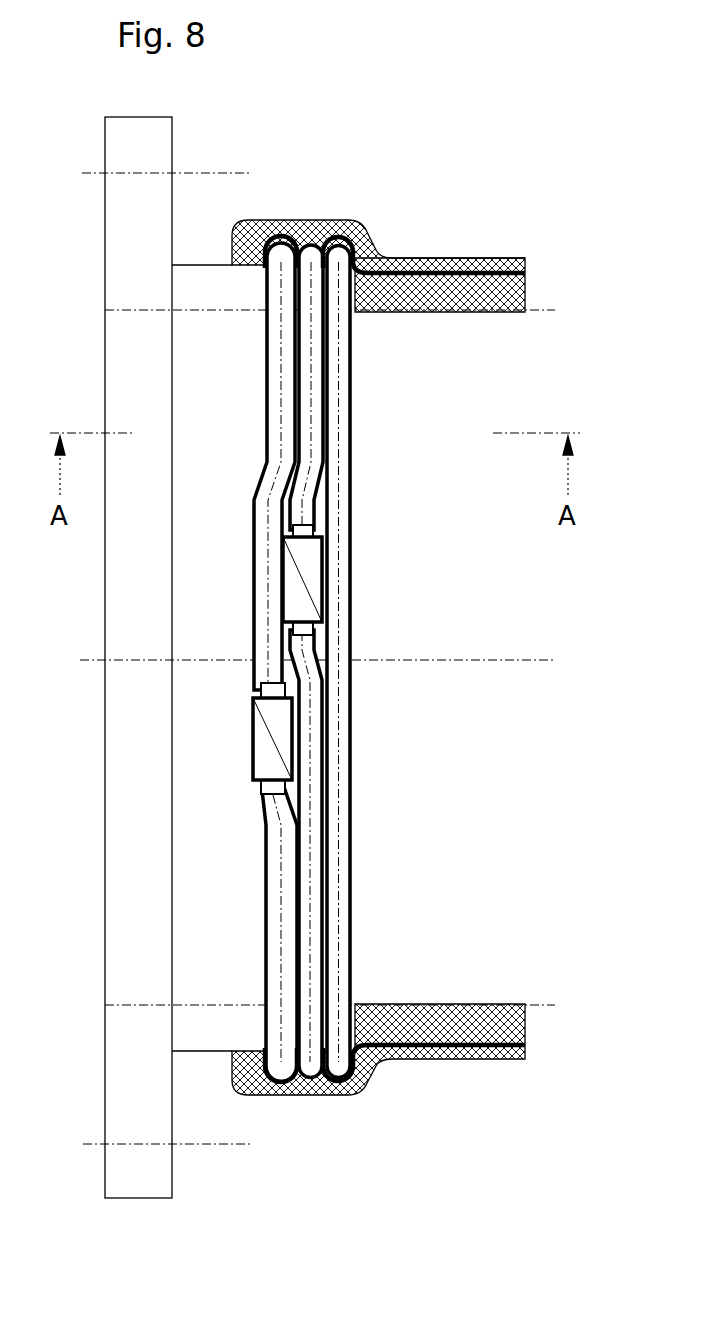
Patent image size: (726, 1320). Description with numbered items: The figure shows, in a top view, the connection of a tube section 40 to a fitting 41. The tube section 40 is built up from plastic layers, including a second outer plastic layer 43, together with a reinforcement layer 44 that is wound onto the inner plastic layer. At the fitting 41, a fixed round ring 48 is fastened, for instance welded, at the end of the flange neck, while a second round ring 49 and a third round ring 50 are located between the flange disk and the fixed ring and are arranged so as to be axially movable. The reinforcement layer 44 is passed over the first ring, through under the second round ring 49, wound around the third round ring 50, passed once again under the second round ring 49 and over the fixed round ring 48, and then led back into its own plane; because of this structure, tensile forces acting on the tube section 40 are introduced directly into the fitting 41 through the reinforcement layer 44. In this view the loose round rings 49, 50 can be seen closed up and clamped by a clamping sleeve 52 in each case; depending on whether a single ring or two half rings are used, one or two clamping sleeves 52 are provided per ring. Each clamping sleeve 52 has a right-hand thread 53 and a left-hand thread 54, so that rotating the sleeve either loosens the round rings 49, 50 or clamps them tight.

The tube section 40 is at (505, 290).
The fitting 41 is at (118, 585).
The second outer plastic layer 43 is at (403, 258).
The reinforcement layer 44 is at (130, 228).
The round ring 48 is at (332, 870).
The second round ring 49 is at (307, 947).
The third round ring 50 is at (277, 918).
The clamping sleeve 52 is at (300, 583).
The right-hand thread 53 is at (262, 686).
The left-hand thread 54 is at (262, 787).